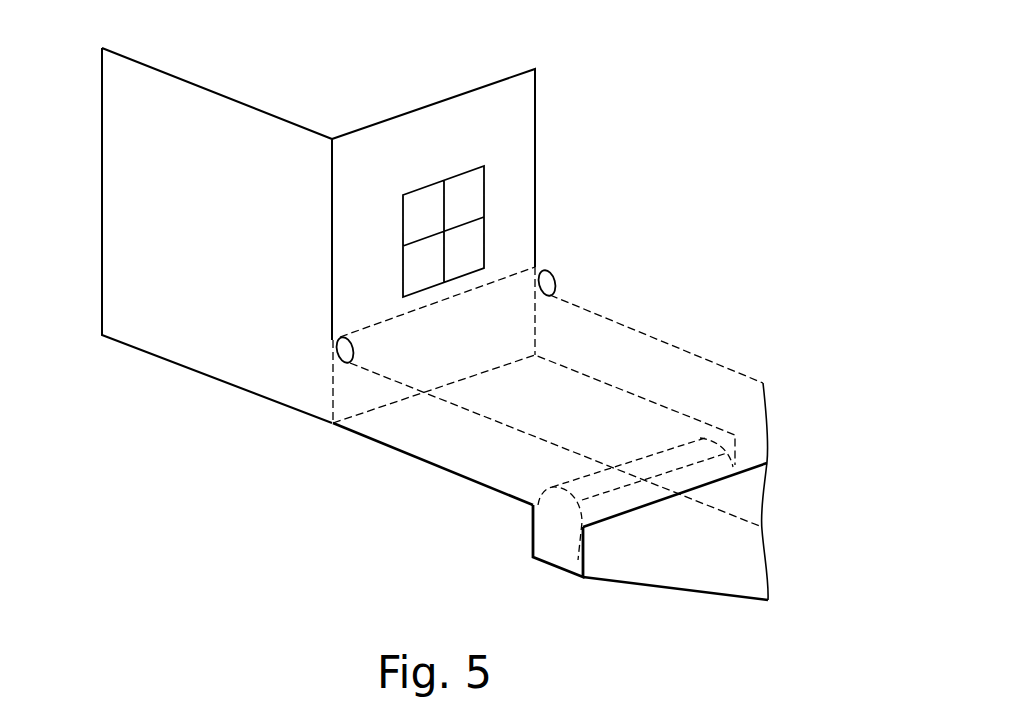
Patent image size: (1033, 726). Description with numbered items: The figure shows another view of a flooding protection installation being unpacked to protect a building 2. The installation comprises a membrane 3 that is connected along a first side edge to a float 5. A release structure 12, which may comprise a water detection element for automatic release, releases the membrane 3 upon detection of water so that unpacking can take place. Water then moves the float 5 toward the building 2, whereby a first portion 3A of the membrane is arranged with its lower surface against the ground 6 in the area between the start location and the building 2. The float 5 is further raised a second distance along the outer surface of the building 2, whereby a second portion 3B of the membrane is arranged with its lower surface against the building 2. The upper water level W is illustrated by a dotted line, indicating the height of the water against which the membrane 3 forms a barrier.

The building 2 is at (214, 244).
The membrane 3 is at (549, 282).
The first portion of the membrane 3A is at (430, 463).
The second portion of the membrane 3B is at (333, 392).
The float 5 is at (337, 348).
The ground 6 is at (307, 501).
The release structure 12 is at (559, 541).
The upper water level W is at (633, 331).